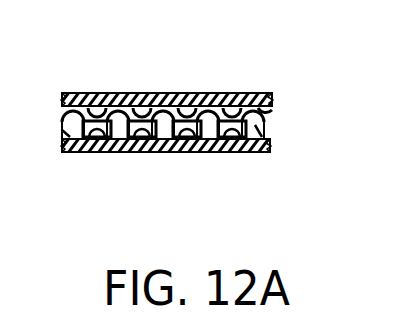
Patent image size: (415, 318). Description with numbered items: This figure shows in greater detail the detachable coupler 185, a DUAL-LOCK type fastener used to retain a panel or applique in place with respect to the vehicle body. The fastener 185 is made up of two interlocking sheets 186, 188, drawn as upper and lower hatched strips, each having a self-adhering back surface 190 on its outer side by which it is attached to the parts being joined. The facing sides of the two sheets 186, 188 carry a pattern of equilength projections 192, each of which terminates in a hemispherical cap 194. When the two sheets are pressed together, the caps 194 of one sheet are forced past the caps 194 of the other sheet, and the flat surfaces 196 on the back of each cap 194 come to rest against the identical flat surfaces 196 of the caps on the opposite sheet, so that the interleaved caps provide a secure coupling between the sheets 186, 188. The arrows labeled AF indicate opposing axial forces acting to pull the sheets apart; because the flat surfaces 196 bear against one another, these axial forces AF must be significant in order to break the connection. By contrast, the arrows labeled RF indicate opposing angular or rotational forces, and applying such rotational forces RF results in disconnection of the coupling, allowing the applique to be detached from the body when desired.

The detachable coupler 185 is at (189, 115).
The interlocking sheet 186 is at (169, 129).
The interlocking sheet 188 is at (78, 154).
The self-adhering back surface 190 is at (170, 93).
The equilength projections 192 is at (62, 118).
The hemispherical caps 194 is at (262, 126).
The flat surfaces 196 is at (257, 122).
The axial forces AF is at (203, 90).
The rotational forces RF is at (260, 90).